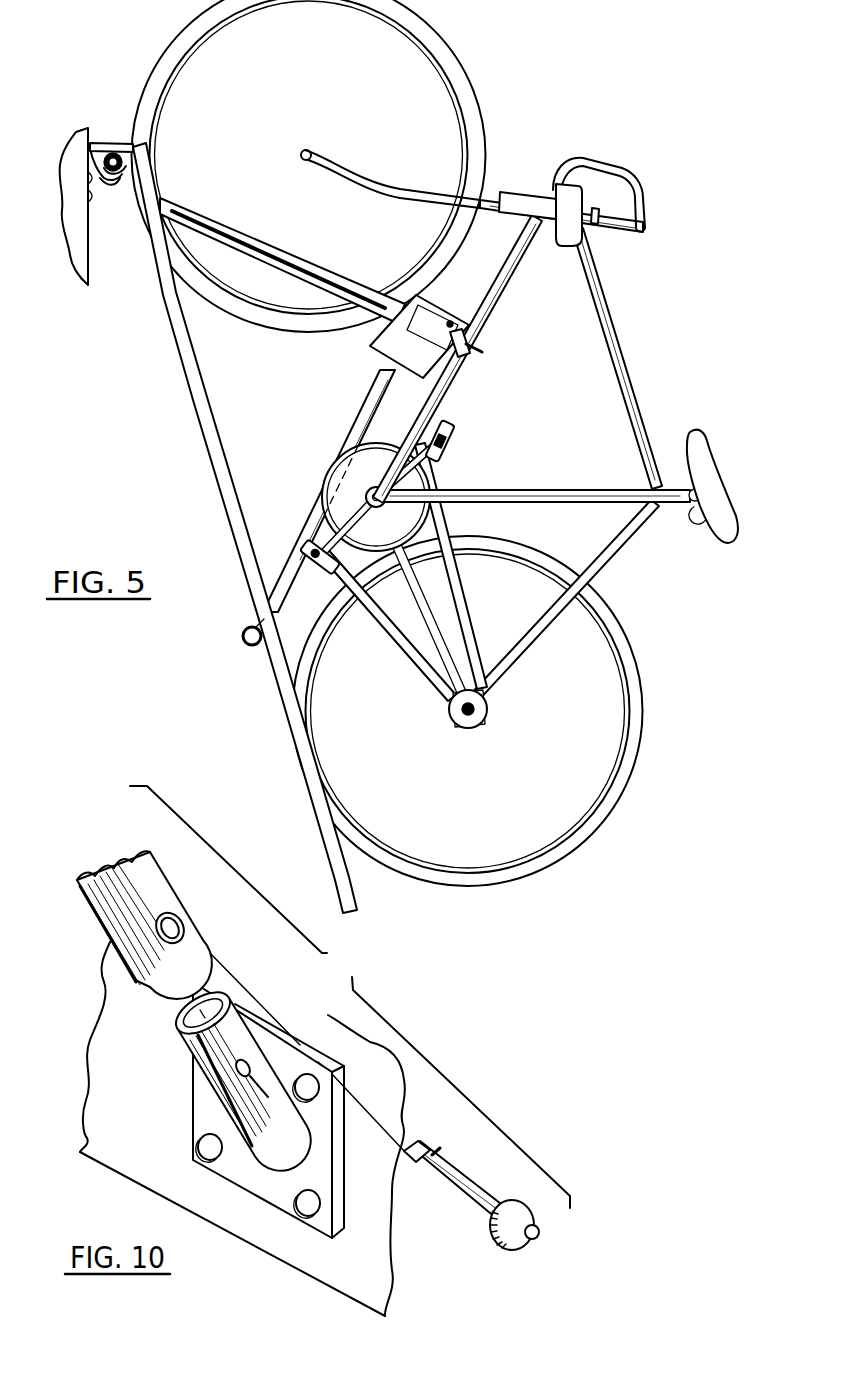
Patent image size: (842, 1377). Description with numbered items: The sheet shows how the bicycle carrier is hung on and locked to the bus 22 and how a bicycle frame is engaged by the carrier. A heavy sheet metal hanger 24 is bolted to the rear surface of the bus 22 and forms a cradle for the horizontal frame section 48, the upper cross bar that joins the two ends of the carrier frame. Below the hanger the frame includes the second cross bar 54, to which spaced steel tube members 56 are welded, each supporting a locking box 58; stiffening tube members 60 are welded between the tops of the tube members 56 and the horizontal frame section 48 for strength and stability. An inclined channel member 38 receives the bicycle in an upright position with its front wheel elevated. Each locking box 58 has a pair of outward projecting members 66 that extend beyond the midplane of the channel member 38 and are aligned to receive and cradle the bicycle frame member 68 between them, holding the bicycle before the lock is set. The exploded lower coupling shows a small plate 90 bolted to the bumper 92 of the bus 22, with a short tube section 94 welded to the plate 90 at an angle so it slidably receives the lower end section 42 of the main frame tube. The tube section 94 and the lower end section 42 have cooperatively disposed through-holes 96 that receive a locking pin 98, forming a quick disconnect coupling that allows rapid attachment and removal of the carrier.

In FIG. 5, the bus 22 is at (82, 256).
In FIG. 5, the hanger 24 is at (104, 178).
In FIG. 5, the channel member 38 is at (192, 396).
In FIG. 10, the lower end section 42 is at (132, 866).
In FIG. 5, the horizontal frame section 48 is at (111, 152).
In FIG. 5, the second cross bar 54 is at (243, 636).
In FIG. 5, the steel tube member 56 is at (370, 418).
In FIG. 5, the locking box 58 is at (386, 341).
In FIG. 5, the stiffening tube member 60 is at (233, 230).
In FIG. 5, the outward projecting member 66 is at (472, 341).
In FIG. 5, the frame member 68 is at (440, 402).
In FIG. 10, the plate 90 is at (336, 1222).
In FIG. 10, the bumper 92 is at (108, 1095).
In FIG. 10, the short tube section 94 is at (190, 1045).
In FIG. 10, the through-hole 96 is at (183, 930).
In FIG. 10, the locking pin 98 is at (463, 1203).